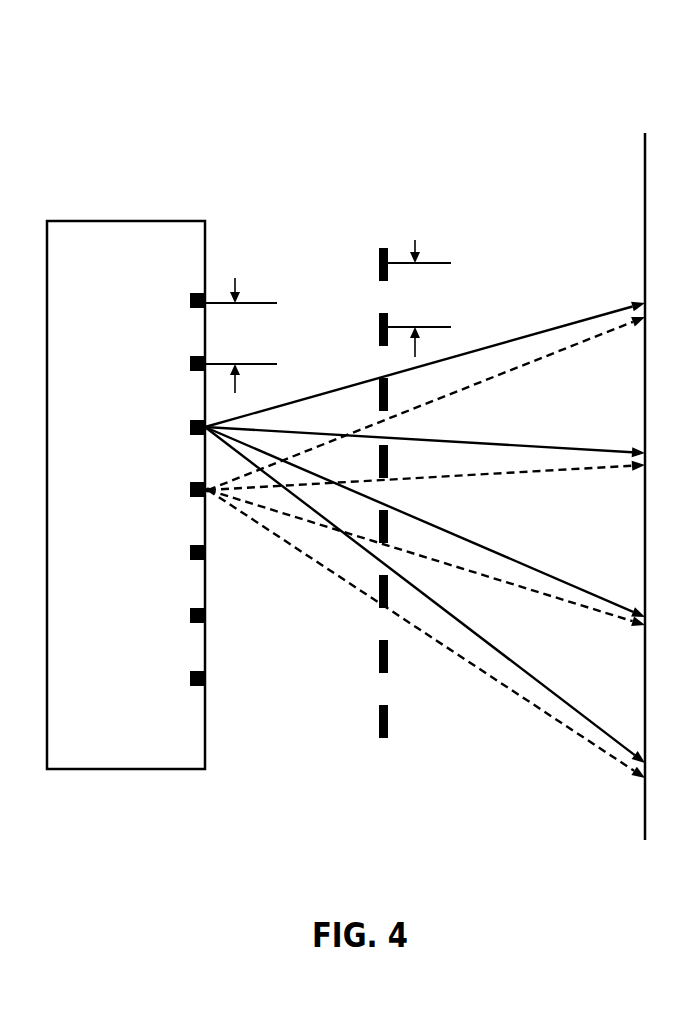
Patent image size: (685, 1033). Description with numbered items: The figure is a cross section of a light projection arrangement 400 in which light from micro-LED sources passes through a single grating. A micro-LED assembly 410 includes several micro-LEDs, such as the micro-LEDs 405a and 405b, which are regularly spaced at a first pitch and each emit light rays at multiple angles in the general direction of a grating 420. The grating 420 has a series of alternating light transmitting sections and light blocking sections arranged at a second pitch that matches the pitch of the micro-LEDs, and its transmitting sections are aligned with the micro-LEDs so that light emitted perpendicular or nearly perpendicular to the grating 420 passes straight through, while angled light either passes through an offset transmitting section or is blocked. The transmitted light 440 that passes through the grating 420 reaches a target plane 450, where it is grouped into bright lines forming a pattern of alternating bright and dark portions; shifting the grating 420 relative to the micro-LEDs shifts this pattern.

The micro-LED projection system 400 is at (128, 64).
The micro-LED assembly 410 is at (145, 316).
The micro-LED 405a is at (180, 418).
The micro-LED 405b is at (180, 481).
The grating 420 is at (434, 406).
The transmitted light 440 is at (388, 646).
The target plane 450 is at (645, 434).